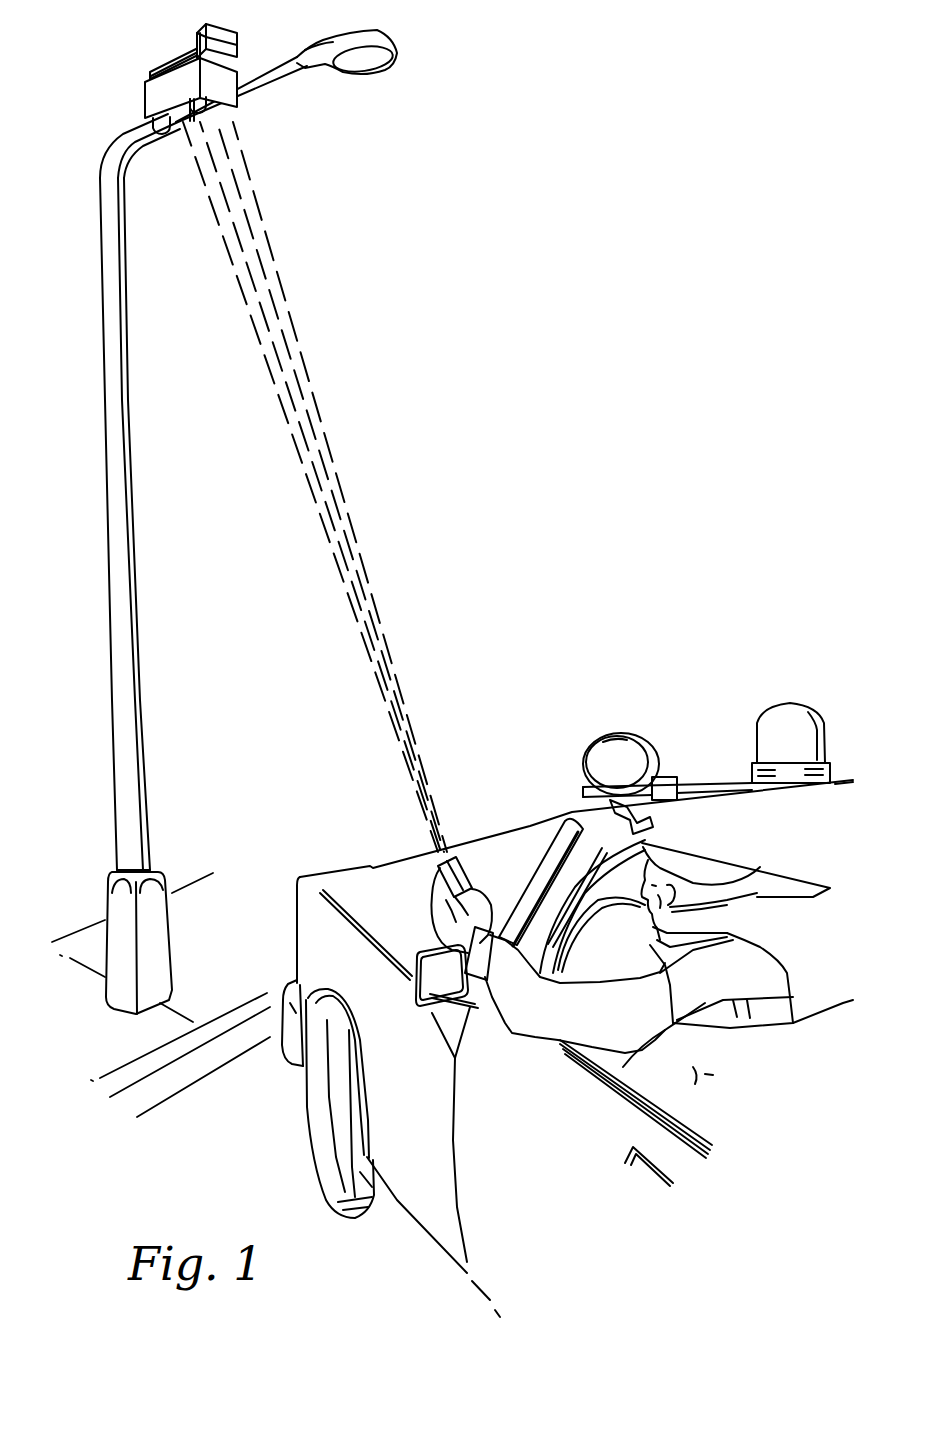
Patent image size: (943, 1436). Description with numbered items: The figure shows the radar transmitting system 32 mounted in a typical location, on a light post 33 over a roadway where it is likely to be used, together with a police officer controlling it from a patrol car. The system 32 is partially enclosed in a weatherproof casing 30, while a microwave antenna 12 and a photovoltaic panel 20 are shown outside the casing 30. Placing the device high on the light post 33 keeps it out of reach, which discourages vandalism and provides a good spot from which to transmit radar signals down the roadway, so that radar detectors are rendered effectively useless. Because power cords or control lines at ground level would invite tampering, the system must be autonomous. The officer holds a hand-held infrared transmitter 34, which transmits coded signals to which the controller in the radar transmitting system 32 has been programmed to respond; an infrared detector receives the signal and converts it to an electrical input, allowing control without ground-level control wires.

The microwave antenna 12 is at (243, 40).
The photovoltaic panel 20 is at (168, 62).
The weatherproof casing 30 is at (143, 103).
The radar transmitting system 32 is at (247, 107).
The light post 33 is at (100, 255).
The hand-held infrared transmitter 34 is at (470, 858).